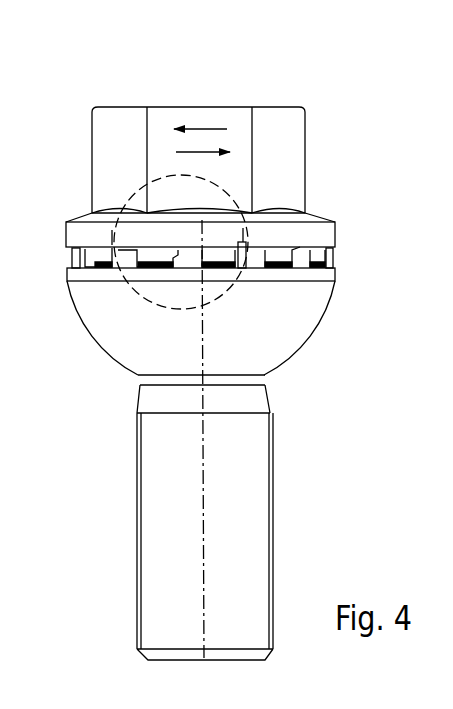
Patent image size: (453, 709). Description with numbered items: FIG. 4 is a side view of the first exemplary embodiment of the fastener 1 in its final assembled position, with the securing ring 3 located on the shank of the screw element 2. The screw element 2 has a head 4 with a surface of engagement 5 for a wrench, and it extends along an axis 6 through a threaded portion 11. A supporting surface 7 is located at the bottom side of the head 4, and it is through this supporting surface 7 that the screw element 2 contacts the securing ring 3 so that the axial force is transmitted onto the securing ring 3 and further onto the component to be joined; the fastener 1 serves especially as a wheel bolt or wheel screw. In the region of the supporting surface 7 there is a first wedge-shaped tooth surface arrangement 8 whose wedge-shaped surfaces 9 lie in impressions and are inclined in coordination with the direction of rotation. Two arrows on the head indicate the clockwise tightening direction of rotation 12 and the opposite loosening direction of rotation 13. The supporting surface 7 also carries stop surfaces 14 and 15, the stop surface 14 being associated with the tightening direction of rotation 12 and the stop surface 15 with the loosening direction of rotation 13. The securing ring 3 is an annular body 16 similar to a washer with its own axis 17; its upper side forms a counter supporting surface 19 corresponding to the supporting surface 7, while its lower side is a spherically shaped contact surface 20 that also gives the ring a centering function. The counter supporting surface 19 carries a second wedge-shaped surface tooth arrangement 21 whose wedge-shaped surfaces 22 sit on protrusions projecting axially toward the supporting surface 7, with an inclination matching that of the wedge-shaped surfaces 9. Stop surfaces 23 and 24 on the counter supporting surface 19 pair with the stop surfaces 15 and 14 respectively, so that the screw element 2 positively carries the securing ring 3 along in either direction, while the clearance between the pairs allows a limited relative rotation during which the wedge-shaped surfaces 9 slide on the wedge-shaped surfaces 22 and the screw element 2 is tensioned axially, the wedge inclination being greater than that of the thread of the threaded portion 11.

The fastener 1 is at (350, 118).
The screw element 2 is at (308, 133).
The securing ring 3 is at (305, 348).
The head 4 is at (275, 122).
The surface of engagement 5 is at (201, 124).
The axis 6 is at (275, 536).
The supporting surface 7 is at (334, 262).
The first wedge-shaped tooth surface arrangement 8 is at (247, 236).
The wedge-shaped surfaces 9 is at (322, 226).
The threaded portion 11 is at (269, 568).
The tightening direction of rotation 12 is at (186, 128).
The loosening direction of rotation 13 is at (218, 150).
The stop surface 14 is at (163, 263).
The stop surface 15 is at (145, 258).
The annular body 16 is at (297, 329).
The axis 17 is at (205, 517).
The counter supporting surface 19 is at (229, 269).
The contact surface 20 is at (280, 367).
The second wedge-shaped surface tooth arrangement 21 is at (253, 285).
The wedge-shaped surfaces 22 is at (239, 295).
The stop surface 23 is at (186, 250).
The stop surface 24 is at (140, 253).